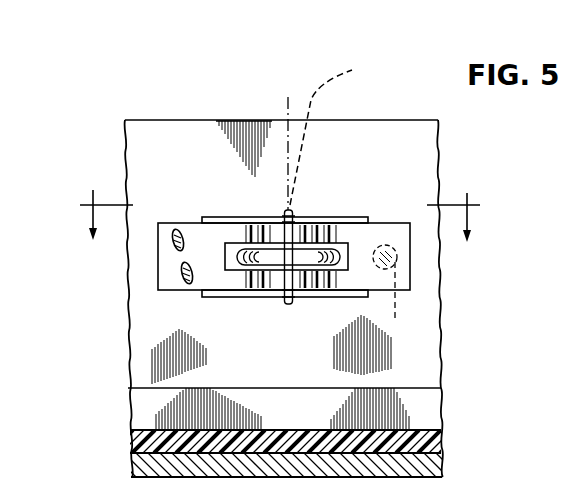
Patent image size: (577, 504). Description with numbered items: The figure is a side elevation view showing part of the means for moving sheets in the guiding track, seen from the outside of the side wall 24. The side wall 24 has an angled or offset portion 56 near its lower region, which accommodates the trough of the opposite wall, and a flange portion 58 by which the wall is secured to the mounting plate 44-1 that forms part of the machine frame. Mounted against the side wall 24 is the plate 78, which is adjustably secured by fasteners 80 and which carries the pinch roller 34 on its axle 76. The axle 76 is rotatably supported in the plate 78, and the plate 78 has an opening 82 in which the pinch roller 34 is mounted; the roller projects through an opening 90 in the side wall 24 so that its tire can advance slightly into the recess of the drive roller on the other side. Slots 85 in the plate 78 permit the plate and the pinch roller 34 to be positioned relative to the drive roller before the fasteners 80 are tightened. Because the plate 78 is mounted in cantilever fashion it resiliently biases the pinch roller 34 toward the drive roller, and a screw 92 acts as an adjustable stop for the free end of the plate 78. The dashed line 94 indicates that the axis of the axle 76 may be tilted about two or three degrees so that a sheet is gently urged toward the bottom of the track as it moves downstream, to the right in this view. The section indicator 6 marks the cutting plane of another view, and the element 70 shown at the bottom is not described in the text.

The side wall 24 is at (214, 121).
The dashed line 94 is at (335, 132).
The section line 6- 6 is at (280, 202).
The plate 78 is at (218, 287).
The opening 90 is at (240, 217).
The opening 82 is at (342, 272).
The pinch roller 34 is at (340, 245).
The axle 76 is at (292, 212).
The fasteners 80 is at (176, 232).
The slots 85 is at (176, 253).
The screw 92 is at (395, 316).
The offset portion 56 is at (258, 395).
The flange portion 58 is at (437, 441).
The mounting plate 44-1 is at (437, 466).
The lower element 70 is at (259, 499).